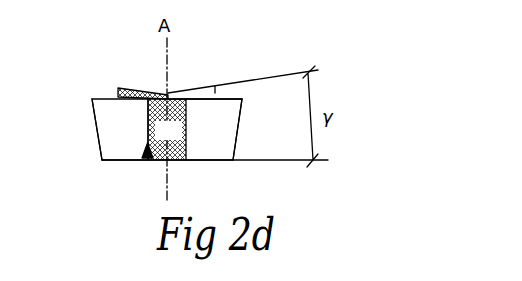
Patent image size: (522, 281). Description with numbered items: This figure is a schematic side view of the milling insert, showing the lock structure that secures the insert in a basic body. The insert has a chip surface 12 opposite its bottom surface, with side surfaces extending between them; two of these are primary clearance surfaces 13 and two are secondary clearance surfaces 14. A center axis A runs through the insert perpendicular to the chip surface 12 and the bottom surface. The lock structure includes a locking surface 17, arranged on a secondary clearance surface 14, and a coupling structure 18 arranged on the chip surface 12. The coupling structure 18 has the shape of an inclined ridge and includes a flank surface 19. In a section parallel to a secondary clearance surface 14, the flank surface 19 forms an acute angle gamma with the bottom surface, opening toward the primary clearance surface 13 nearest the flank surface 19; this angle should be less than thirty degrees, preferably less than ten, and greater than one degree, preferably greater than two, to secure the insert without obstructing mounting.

The chip surface 12 is at (108, 98).
The primary clearance surfaces 13 is at (98, 128).
The secondary clearance surfaces 14 is at (148, 158).
The locking surface 17 is at (181, 139).
The coupling structure 18 is at (213, 95).
The flank surface 19 is at (189, 93).